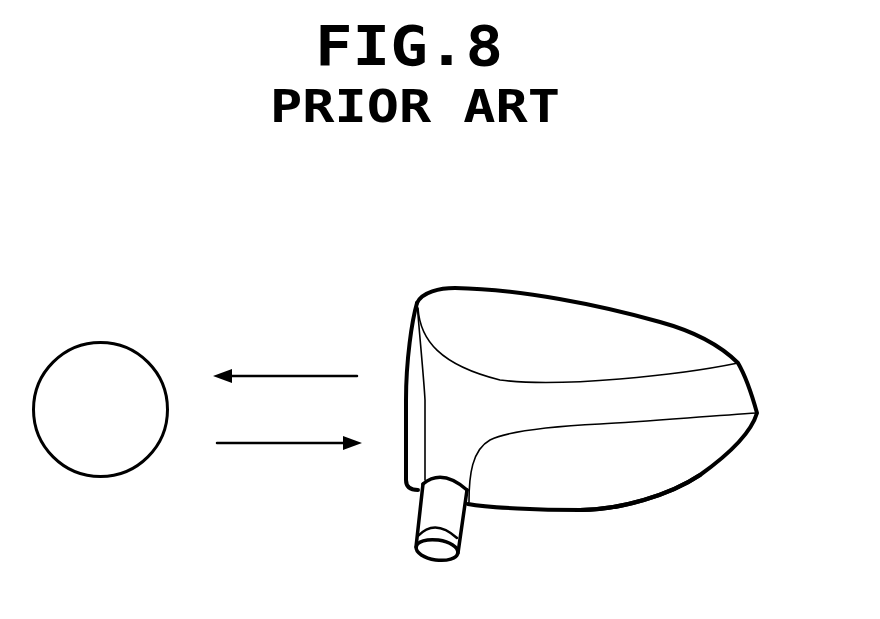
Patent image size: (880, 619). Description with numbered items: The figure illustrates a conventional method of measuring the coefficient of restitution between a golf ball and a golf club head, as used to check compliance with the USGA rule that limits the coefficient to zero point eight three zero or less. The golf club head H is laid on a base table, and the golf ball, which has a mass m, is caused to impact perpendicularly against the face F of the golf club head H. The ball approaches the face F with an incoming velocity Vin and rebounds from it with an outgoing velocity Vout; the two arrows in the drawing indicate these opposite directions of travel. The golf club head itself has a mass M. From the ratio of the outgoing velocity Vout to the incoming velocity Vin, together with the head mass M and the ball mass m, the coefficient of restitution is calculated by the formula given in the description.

The mass of the golf club head M is at (586, 400).
The face F is at (413, 355).
The golf club head H is at (648, 482).
The mass of the golf ball m is at (101, 410).
The outgoing velocity Vout is at (285, 353).
The incoming velocity Vin is at (289, 464).